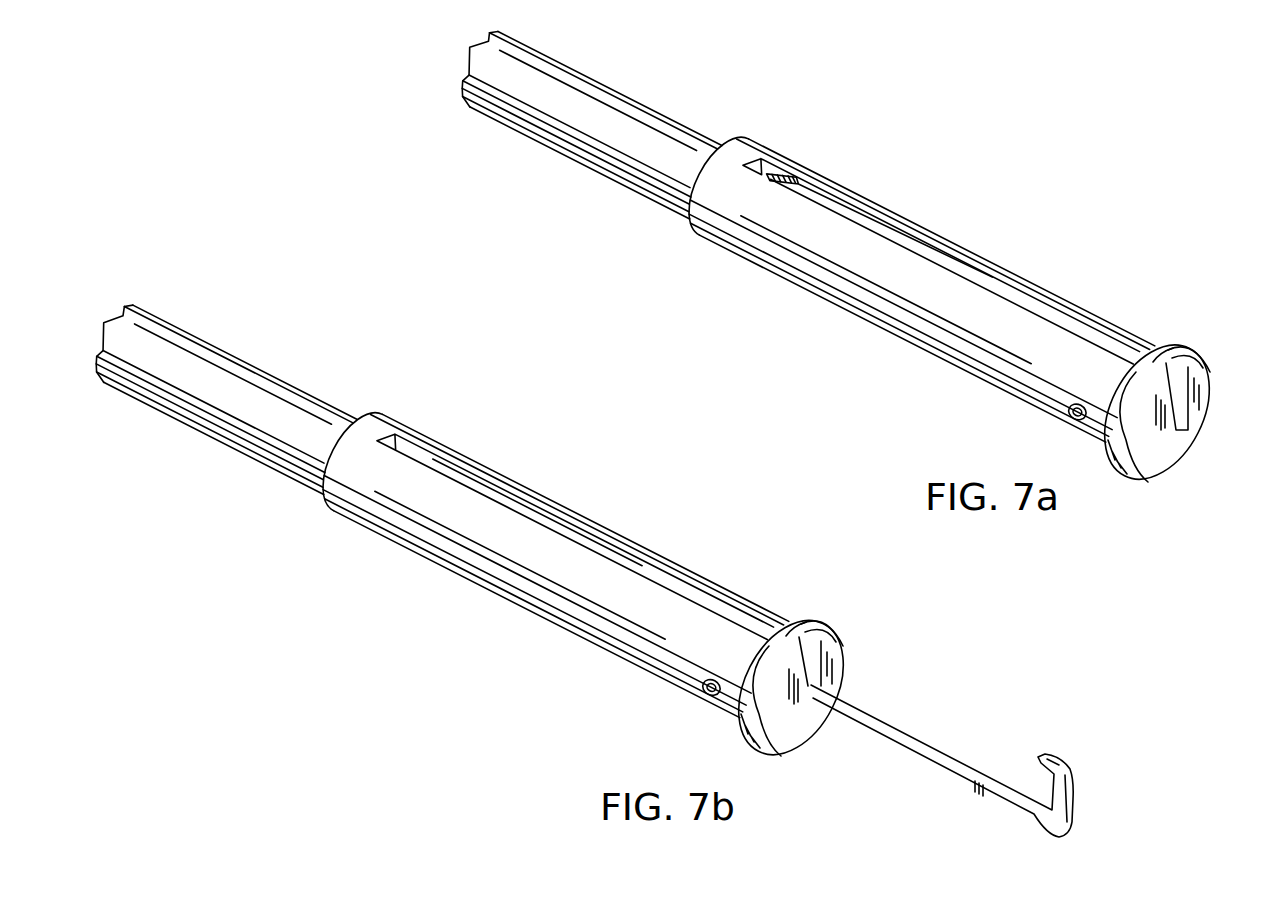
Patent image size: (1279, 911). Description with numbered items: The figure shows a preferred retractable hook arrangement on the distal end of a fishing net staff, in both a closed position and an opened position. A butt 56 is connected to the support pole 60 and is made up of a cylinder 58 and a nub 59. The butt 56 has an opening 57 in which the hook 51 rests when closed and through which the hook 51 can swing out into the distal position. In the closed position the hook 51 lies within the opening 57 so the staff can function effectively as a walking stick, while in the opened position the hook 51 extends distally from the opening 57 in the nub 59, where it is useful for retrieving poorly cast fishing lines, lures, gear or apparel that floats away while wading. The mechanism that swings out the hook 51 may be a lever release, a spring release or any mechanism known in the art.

In FIG. 7A, the hook 51 is at (831, 202).
In FIG. 7B, the hook 51 is at (1075, 803).
In FIG. 7A, the butt 56 is at (963, 252).
In FIG. 7B, the butt 56 is at (600, 523).
In FIG. 7A, the opening 57 is at (1167, 366).
In FIG. 7B, the opening 57 is at (802, 640).
In FIG. 7A, the cylinder 58 is at (891, 339).
In FIG. 7A, the nub 59 is at (1157, 452).
In FIG. 7B, the nub 59 is at (800, 733).
In FIG. 7A, the support pole 60 is at (612, 98).
In FIG. 7B, the support pole 60 is at (247, 372).